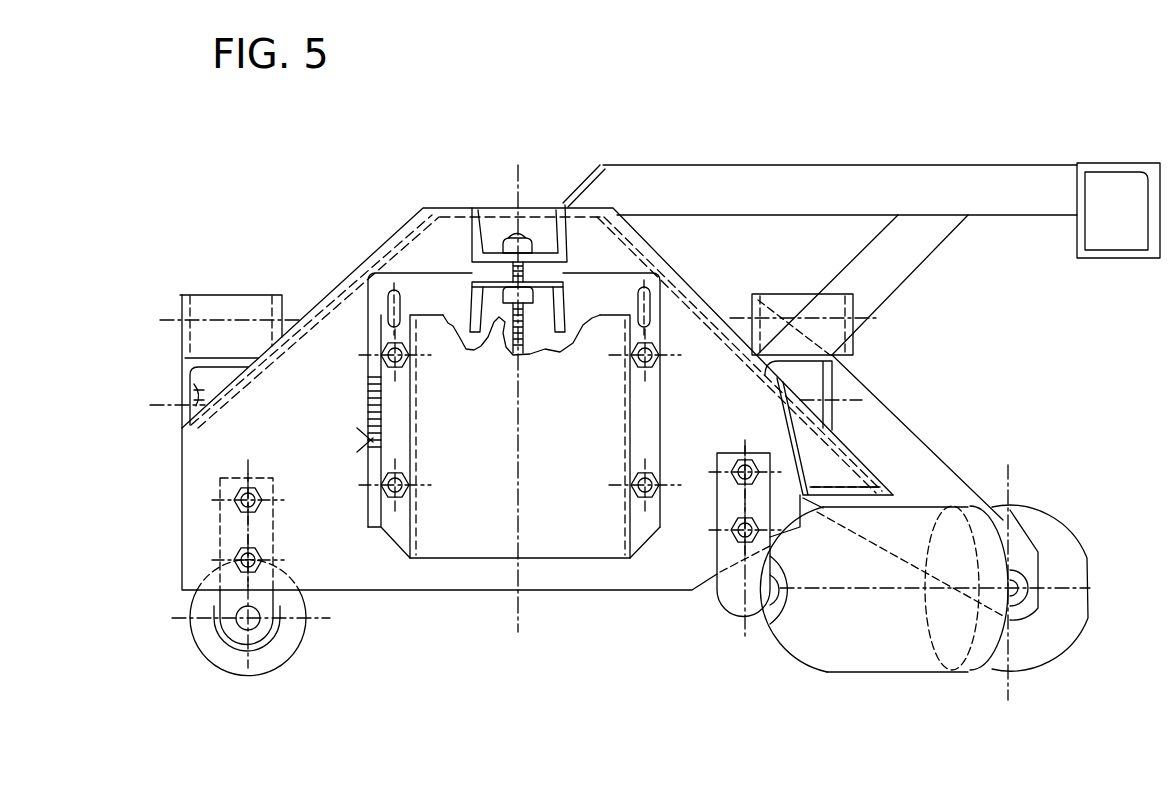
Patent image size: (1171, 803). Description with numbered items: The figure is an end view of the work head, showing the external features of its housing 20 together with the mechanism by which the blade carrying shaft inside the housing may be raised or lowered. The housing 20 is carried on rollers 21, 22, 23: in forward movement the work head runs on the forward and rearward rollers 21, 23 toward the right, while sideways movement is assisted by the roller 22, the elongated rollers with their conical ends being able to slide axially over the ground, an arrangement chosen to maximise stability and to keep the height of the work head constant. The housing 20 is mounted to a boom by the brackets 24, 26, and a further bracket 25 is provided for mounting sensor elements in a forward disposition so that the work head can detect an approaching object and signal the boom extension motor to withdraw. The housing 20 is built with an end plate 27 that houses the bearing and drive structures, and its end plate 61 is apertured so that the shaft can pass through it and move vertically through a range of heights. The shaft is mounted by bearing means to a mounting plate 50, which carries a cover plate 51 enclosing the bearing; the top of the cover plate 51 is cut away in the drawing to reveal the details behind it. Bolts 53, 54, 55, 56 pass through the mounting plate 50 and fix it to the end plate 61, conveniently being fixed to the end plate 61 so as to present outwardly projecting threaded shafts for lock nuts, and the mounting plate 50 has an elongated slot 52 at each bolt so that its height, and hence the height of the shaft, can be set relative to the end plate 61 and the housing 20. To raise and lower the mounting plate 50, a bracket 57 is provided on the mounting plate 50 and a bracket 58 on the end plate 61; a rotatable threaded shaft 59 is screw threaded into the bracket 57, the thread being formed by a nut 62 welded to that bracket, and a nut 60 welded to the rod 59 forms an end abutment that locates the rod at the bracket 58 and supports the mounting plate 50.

The housing 20 is at (588, 398).
The roller 21 is at (1048, 656).
The roller 22 is at (893, 668).
The roller 23 is at (205, 640).
The bracket 24 is at (790, 306).
The bracket 25 is at (756, 172).
The bracket 26 is at (200, 346).
The end plate 27 is at (400, 578).
The mounting plate 50 is at (402, 296).
The cover plate 51 is at (520, 473).
The elongated slot 52 is at (393, 291).
The bolt 53 is at (385, 358).
The bolt 54 is at (385, 490).
The bolt 55 is at (662, 356).
The bolt 56 is at (638, 490).
The bracket 57 is at (567, 300).
The bracket 58 is at (566, 254).
The threaded shaft 59 is at (540, 335).
The nut 60 is at (517, 240).
The end plate 61 is at (672, 578).
The nut 62 is at (514, 338).